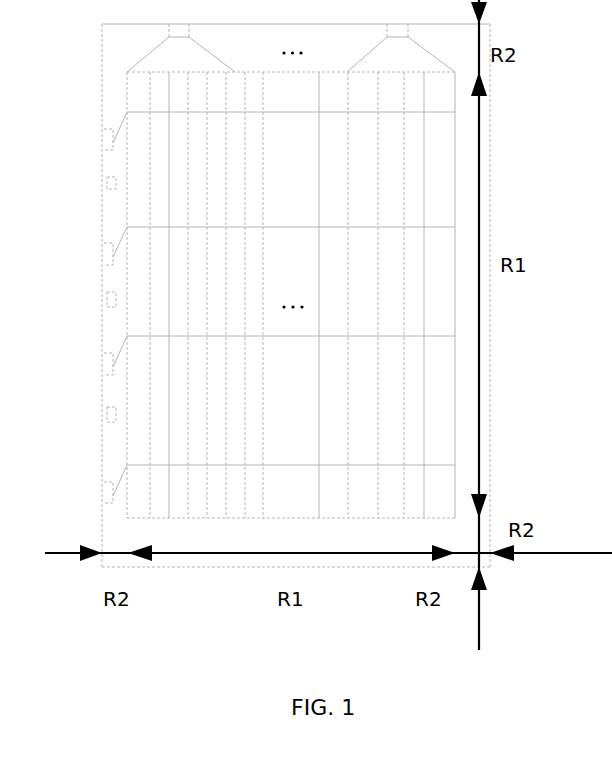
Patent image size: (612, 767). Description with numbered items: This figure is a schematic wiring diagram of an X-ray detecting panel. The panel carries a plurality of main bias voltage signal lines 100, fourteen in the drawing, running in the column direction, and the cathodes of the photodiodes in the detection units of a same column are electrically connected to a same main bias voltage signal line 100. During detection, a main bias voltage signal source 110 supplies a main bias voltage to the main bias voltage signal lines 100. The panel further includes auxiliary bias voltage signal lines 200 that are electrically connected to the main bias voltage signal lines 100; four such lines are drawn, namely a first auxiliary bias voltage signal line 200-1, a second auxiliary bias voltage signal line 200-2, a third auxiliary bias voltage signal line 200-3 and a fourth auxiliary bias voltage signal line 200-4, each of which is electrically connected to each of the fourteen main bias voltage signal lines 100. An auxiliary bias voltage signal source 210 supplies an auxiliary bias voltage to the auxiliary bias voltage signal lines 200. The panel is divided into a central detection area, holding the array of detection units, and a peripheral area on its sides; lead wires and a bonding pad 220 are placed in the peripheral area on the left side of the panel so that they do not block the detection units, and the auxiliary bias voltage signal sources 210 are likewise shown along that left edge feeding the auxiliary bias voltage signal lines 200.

The main bias voltage signal line 100 is at (263, 158).
The main bias voltage signal source 110 is at (182, 24).
The auxiliary bias voltage signal line 200 is at (291, 301).
The first auxiliary bias voltage signal line 200-1 is at (291, 123).
The second auxiliary bias voltage signal line 200-2 is at (291, 238).
The third auxiliary bias voltage signal line 200-3 is at (291, 349).
The fourth auxiliary bias voltage signal line 200-4 is at (291, 478).
The auxiliary bias voltage signal source 210 is at (110, 137).
The bonding pad 220 is at (107, 183).